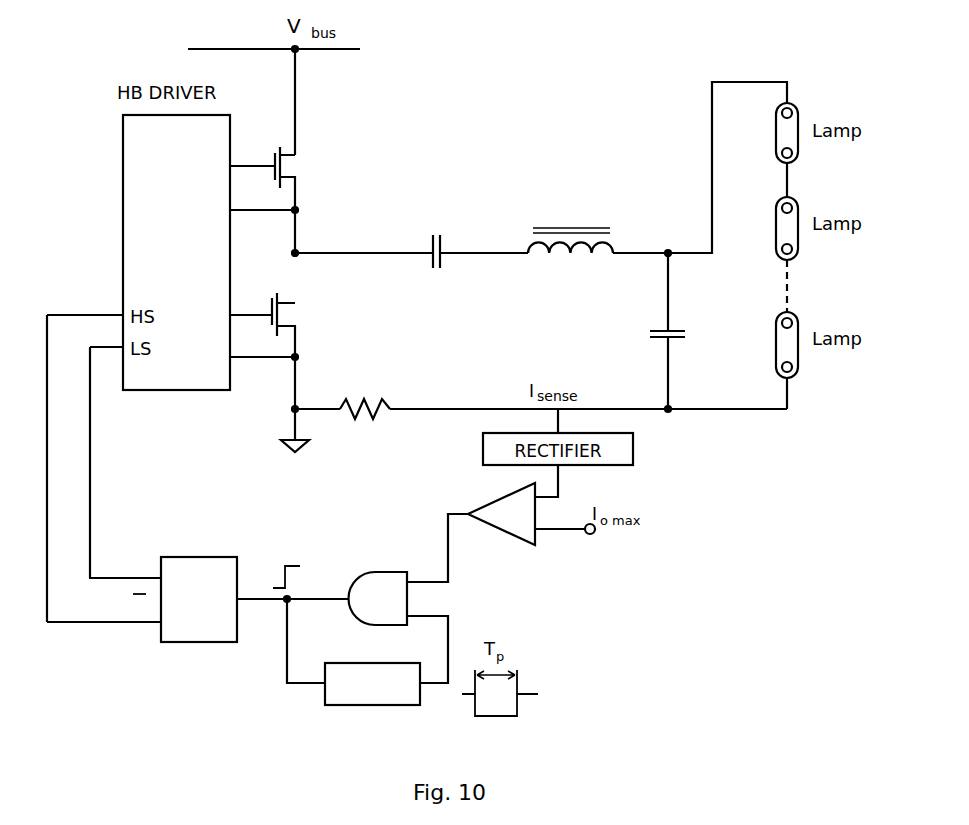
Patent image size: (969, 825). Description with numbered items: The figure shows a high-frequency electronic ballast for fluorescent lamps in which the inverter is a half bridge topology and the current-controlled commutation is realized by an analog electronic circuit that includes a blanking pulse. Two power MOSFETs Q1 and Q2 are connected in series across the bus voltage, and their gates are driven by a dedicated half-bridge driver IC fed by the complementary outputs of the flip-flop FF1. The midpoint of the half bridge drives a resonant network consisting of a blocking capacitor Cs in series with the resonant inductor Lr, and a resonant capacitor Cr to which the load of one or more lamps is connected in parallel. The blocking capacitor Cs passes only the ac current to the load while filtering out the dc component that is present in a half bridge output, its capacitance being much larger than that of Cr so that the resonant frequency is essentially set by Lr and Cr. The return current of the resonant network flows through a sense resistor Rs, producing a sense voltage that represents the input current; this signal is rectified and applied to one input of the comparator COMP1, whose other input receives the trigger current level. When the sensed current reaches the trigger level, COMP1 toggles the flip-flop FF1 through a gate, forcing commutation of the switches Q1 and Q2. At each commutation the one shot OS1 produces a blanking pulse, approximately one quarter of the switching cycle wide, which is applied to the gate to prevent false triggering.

The Power MOSFET Q1 is at (280, 194).
The Power MOSFET Q2 is at (280, 347).
The blocking capacitor Cs is at (435, 237).
The inductor Lr is at (570, 226).
The capacitor Cr is at (652, 331).
The sense resistor Rs is at (365, 395).
The comparator COMP1 is at (497, 514).
The flip-flop FF1 is at (173, 599).
The one shot OS1 is at (353, 652).